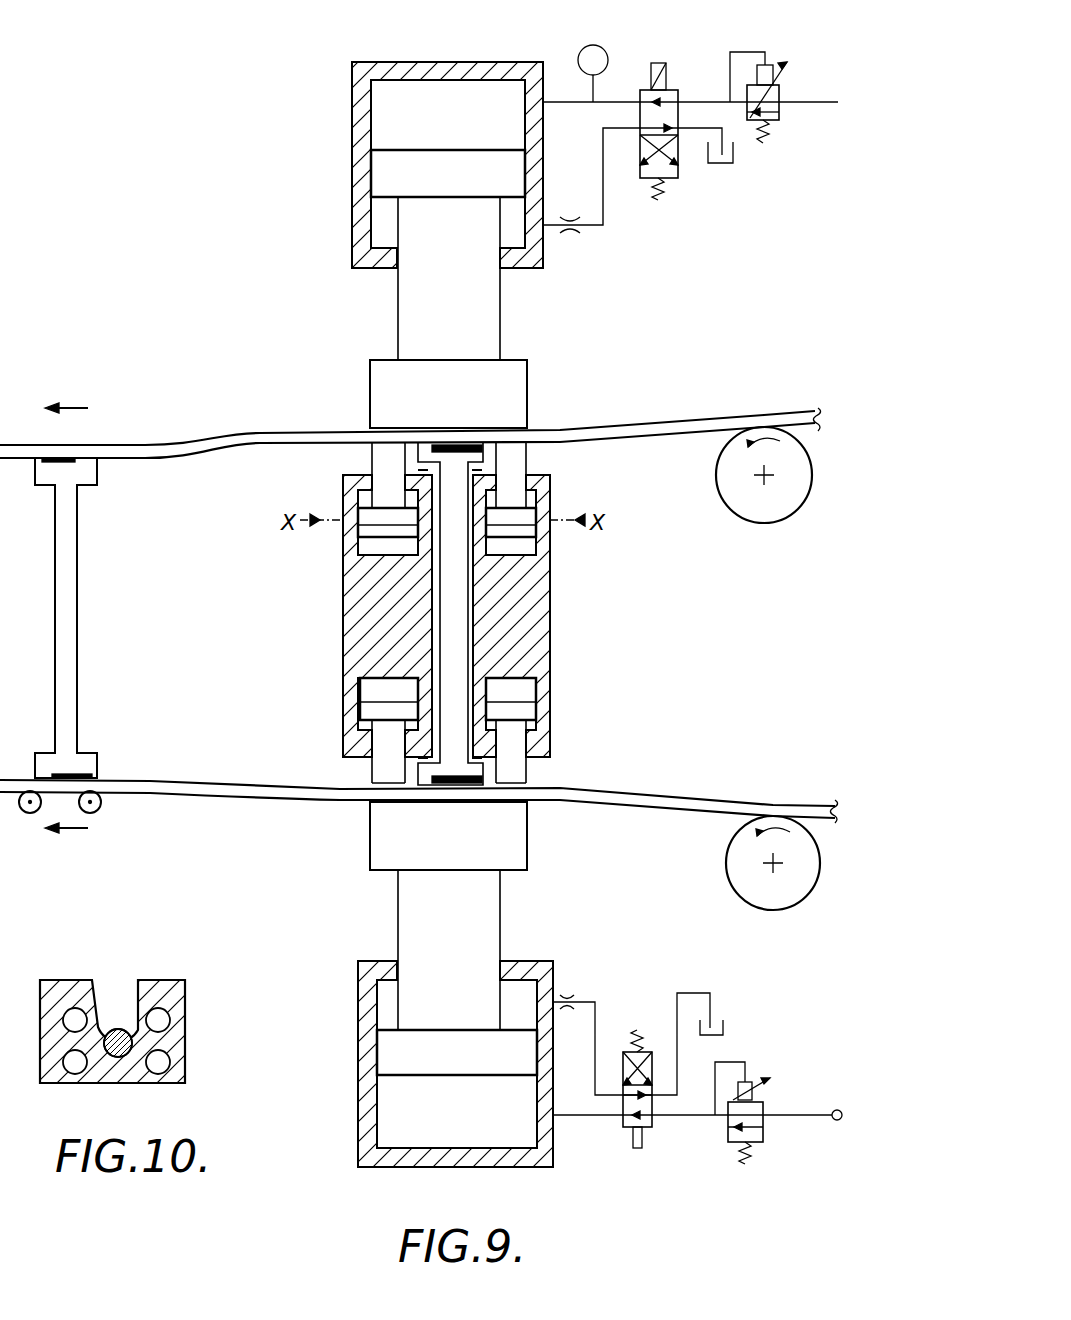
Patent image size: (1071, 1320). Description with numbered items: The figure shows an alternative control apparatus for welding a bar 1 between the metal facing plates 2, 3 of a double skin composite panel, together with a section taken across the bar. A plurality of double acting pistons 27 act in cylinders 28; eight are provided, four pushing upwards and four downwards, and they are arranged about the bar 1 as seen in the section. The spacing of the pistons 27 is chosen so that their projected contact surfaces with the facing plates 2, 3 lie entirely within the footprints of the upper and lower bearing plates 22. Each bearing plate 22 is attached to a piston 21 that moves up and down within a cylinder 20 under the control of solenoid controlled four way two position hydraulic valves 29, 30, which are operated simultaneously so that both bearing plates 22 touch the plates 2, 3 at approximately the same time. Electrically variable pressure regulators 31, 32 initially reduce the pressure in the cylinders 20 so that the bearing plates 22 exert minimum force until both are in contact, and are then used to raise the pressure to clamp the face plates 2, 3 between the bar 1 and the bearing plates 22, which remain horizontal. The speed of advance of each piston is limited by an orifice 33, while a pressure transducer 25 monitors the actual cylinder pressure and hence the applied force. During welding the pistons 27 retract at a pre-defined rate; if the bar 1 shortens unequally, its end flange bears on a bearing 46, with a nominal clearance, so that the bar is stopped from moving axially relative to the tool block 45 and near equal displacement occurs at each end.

In FIG. 9, the cross-member 1 is at (68, 535).
In FIG. 10, the cross-member 1 is at (118, 1025).
In FIG. 9, the facing plate 2 is at (268, 430).
In FIG. 9, the facing plate 3 is at (210, 792).
In FIG. 9, the cylinder 20 is at (385, 108).
In FIG. 9, the piston 21 is at (385, 175).
In FIG. 9, the bearing plate 22 is at (390, 370).
In FIG. 9, the pressure transducer 25 is at (600, 48).
In FIG. 9, the double acting piston 27 is at (385, 470).
In FIG. 9, the cylinder 28 is at (375, 548).
In FIG. 9, the solenoid controlled four way two position hydraulic valve 29 is at (680, 180).
In FIG. 9, the solenoid controlled four way two position hydraulic valve 30 is at (645, 1135).
In FIG. 9, the electrically variable pressure regulator 31 is at (730, 65).
In FIG. 9, the electrically variable pressure regulator 32 is at (765, 1130).
In FIG. 9, the orifice 33 is at (575, 232).
In FIG. 9, the tool block 45 is at (375, 625).
In FIG. 9, the bearing 46 is at (548, 745).